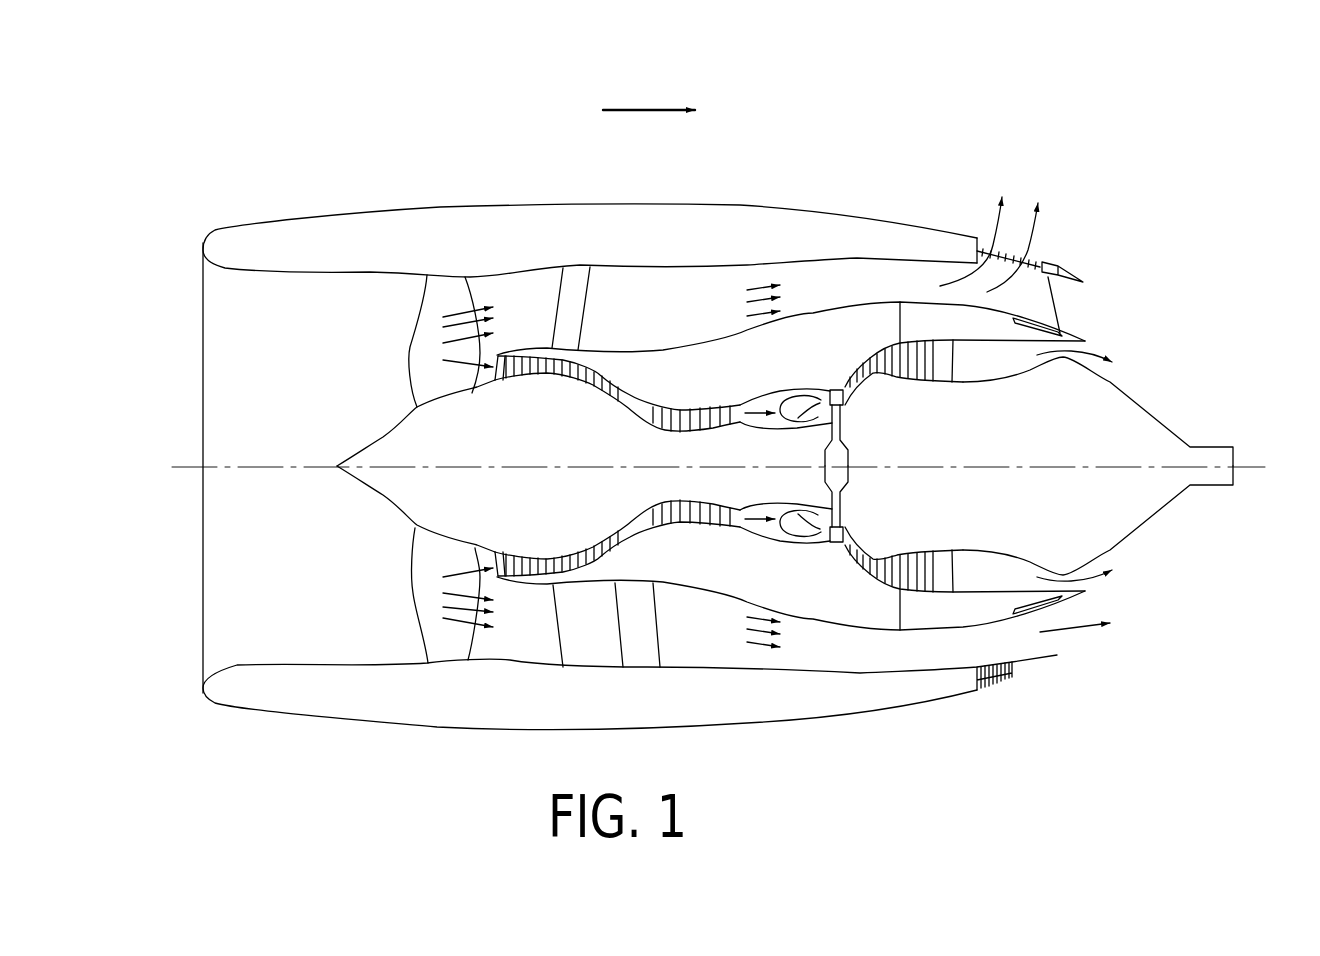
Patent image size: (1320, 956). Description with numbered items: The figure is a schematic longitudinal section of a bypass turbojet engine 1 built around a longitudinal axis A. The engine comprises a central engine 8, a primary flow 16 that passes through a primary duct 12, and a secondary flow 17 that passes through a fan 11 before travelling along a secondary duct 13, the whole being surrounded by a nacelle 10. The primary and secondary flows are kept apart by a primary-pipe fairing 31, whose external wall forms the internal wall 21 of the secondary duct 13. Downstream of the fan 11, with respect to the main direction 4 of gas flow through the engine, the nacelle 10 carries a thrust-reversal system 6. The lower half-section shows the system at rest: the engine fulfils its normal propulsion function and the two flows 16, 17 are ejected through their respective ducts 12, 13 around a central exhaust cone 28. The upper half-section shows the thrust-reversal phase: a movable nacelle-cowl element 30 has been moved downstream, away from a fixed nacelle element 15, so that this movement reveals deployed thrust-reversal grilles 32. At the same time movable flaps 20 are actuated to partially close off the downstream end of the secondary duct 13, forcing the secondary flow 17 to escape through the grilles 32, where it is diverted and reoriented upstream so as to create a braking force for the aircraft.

The turbojet engine 1 is at (383, 152).
The main direction of flow 4 is at (642, 110).
The thrust-reversal system 6 is at (1016, 233).
The central engine 8 is at (383, 437).
The nacelle 10 is at (630, 419).
The fan 11 is at (418, 337).
The primary duct 12 is at (630, 398).
The secondary duct 13 is at (650, 283).
The fixed nacelle element 15 is at (957, 250).
The primary flow 16 is at (747, 400).
The secondary flow 17 is at (763, 282).
The movable flaps 20 is at (1060, 317).
The internal wall of the secondary duct 21 is at (900, 302).
The central exhaust cone 28 is at (1160, 420).
The movable nacelle-cowl element 30 is at (1053, 268).
The primary-pipe fairing 31 is at (820, 310).
The thrust-reversal grilles 32 is at (978, 252).
The longitudinal axis A is at (187, 468).